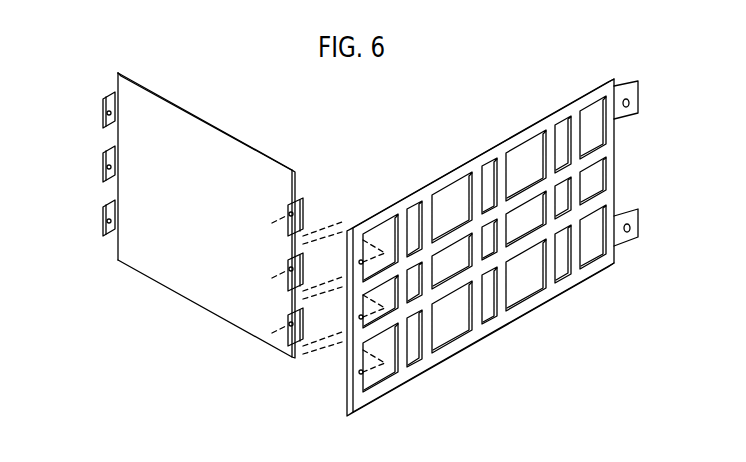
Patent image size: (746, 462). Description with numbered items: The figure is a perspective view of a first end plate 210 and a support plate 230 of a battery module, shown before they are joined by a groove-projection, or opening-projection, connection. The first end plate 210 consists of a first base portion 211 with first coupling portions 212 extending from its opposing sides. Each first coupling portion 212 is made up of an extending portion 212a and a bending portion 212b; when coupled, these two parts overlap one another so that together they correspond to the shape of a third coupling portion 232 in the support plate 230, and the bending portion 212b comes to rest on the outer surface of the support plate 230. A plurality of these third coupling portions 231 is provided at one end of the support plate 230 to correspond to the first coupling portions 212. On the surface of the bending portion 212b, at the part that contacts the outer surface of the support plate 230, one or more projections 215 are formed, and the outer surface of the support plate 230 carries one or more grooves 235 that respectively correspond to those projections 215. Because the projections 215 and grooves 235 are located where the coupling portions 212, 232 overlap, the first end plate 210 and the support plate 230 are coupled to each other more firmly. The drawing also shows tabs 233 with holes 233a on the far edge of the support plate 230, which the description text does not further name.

The first end plate 210 is at (206, 247).
The first base portion 211 is at (200, 293).
The first coupling portion 212 is at (82, 284).
The extending portion 212a is at (110, 224).
The bending portion 212b is at (103, 207).
The projection 215 is at (118, 262).
The support plate 230 is at (506, 248).
The third coupling portions 231 is at (495, 320).
The third coupling portion 232 is at (385, 245).
The fixing tab 233 is at (637, 91).
The fixing hole 233a is at (629, 104).
The groove 235 is at (358, 376).